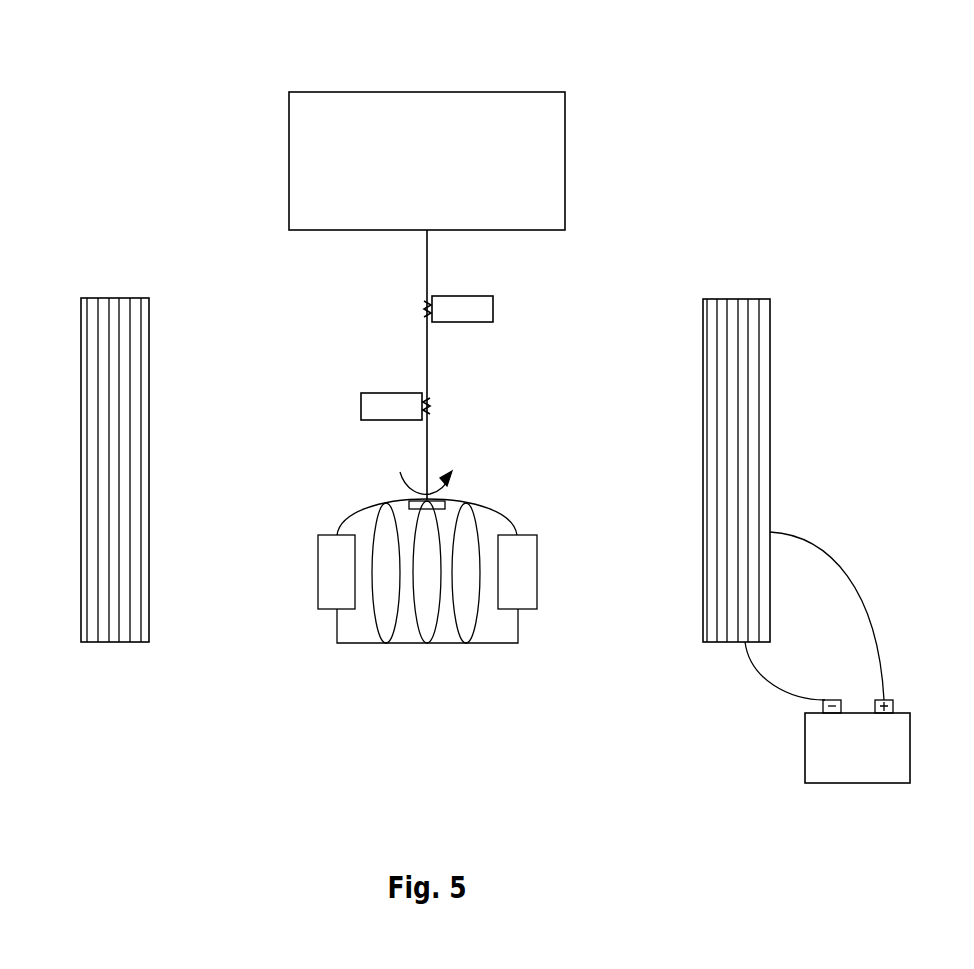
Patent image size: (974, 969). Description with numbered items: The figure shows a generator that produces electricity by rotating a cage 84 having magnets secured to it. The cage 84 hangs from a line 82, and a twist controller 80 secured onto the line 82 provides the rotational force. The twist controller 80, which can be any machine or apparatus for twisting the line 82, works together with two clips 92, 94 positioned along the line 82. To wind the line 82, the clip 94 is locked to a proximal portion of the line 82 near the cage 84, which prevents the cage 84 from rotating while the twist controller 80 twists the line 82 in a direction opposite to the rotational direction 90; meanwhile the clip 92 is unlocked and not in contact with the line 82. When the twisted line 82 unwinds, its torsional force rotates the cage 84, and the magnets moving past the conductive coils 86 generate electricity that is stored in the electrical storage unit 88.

The twist controller 80 is at (531, 92).
The line 82 is at (427, 266).
The cage 84 is at (493, 509).
The conductive coils 86 is at (132, 298).
The electrical storage unit 88 is at (895, 712).
The rotational direction 90 is at (445, 472).
The clip 92 is at (493, 305).
The clip 94 is at (361, 410).